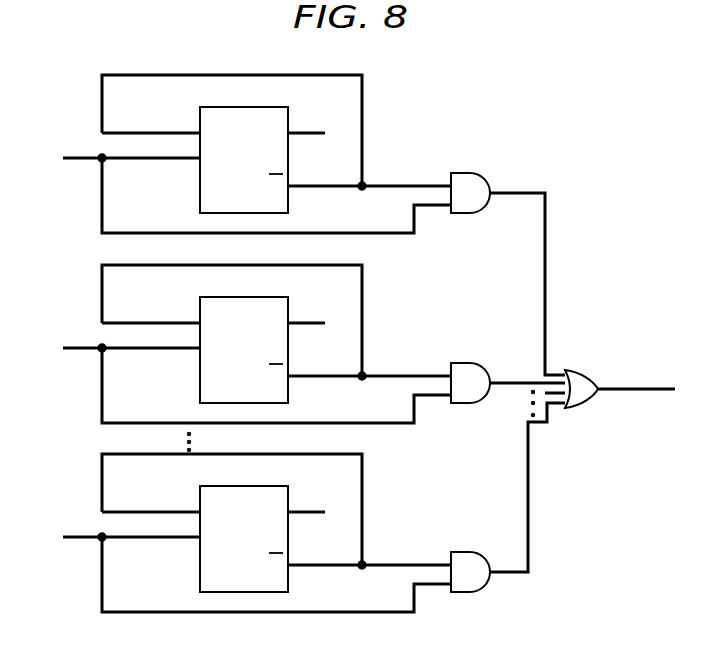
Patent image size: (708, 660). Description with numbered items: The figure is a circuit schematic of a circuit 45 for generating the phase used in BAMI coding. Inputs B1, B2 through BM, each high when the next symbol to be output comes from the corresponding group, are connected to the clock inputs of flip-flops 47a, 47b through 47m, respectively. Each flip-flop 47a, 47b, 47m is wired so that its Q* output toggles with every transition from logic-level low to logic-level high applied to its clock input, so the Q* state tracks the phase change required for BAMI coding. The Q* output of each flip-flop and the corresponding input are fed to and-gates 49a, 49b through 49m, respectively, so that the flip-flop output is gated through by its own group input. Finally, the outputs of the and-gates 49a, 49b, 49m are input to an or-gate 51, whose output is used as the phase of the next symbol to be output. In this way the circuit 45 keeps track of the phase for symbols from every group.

The circuit 45 is at (481, 62).
The flip-flop 47a is at (200, 191).
The flip-flop 47b is at (210, 351).
The flip-flop 47m is at (210, 540).
The and-gate 49a is at (472, 173).
The and-gate 49b is at (470, 354).
The and-gate 49m is at (471, 543).
The or-gate 51 is at (586, 405).